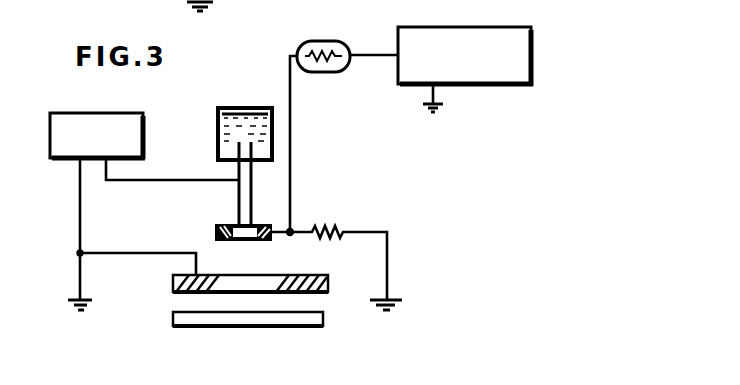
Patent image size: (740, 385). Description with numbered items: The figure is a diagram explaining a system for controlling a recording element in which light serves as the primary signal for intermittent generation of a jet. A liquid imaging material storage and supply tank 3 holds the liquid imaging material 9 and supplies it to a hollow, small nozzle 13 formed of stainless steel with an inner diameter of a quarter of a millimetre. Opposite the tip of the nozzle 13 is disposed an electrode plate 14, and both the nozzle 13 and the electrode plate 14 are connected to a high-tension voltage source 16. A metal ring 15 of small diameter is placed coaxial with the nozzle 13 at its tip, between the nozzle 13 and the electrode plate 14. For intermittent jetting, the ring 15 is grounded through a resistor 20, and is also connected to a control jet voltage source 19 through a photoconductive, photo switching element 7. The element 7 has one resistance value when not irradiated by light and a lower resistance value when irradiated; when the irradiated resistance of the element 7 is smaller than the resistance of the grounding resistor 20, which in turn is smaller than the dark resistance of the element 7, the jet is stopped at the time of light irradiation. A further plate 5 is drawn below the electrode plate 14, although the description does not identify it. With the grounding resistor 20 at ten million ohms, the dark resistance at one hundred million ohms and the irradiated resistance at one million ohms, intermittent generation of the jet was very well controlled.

The liquid imaging material storage and supply tank 3 is at (218, 128).
The record medium plate 5 is at (323, 322).
The photoconductive photo switching element 7 is at (318, 41).
The liquid imaging material 9 is at (248, 114).
The nozzle 13 is at (238, 200).
The electrode plate 14 is at (328, 280).
The metal ring 15 is at (215, 232).
The high-tension voltage source 16 is at (53, 116).
The control jet voltage source 19 is at (444, 27).
The resistor 20 is at (342, 232).